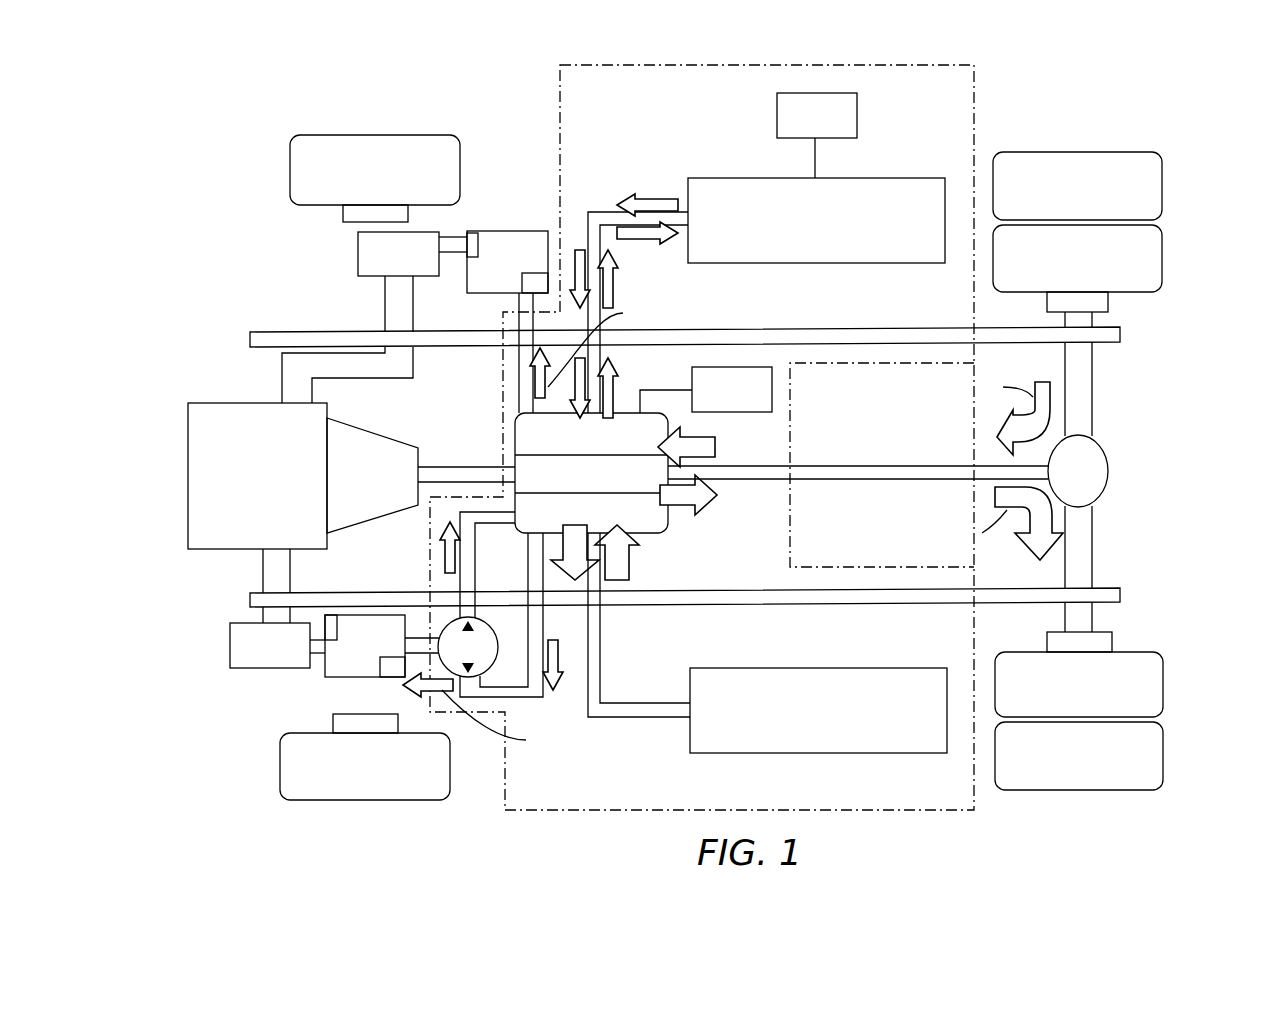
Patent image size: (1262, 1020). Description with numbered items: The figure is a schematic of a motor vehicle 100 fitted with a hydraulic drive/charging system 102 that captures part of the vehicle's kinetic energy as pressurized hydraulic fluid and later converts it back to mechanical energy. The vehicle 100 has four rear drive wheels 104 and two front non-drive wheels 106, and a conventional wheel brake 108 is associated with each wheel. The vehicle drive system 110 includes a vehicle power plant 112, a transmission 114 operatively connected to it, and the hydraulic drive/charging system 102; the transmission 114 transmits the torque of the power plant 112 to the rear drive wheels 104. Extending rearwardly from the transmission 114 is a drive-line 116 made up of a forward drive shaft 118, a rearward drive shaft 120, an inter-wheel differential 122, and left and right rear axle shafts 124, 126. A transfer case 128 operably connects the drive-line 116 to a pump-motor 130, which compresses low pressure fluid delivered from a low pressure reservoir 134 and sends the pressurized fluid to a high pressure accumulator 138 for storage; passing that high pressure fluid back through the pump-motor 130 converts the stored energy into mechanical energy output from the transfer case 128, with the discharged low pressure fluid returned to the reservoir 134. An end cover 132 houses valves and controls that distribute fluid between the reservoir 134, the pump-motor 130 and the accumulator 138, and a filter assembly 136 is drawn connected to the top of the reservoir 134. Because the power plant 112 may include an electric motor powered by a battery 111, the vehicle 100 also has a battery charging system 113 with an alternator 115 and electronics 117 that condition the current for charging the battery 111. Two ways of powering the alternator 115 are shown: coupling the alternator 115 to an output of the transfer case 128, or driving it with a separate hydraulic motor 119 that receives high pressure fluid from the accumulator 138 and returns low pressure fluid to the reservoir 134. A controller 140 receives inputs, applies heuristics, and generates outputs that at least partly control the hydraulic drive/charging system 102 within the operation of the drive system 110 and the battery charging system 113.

The motor vehicle 100 is at (1154, 92).
The hydraulic drive/charging system 102 is at (551, 101).
The rear drive wheels 104 is at (1170, 221).
The front non-drive wheels 106 is at (326, 135).
The wheel brake 108 is at (343, 212).
The vehicle drive system 110 is at (160, 405).
The battery 111 is at (357, 270).
The vehicle power plant 112 is at (187, 512).
The battery charging system 113 is at (534, 220).
The transmission 114 is at (373, 430).
The alternator 115 is at (520, 281).
The drive-line 116 is at (822, 460).
The electronics 117 is at (472, 233).
The forward drive shaft 118 is at (485, 465).
The hydraulic motor 119 is at (500, 645).
The rearward drive shaft 120 is at (890, 466).
The inter-wheel differential 122 is at (1097, 472).
The left rear axle shaft 124 is at (1085, 543).
The right rear axle shaft 126 is at (1083, 383).
The transfer case 128 is at (520, 428).
The pump-motor 130 is at (655, 473).
The end cover 132 is at (657, 520).
The low pressure reservoir 134 is at (908, 178).
The filter assembly 136 is at (777, 115).
The high pressure accumulator 138 is at (915, 755).
The controller 140 is at (773, 380).